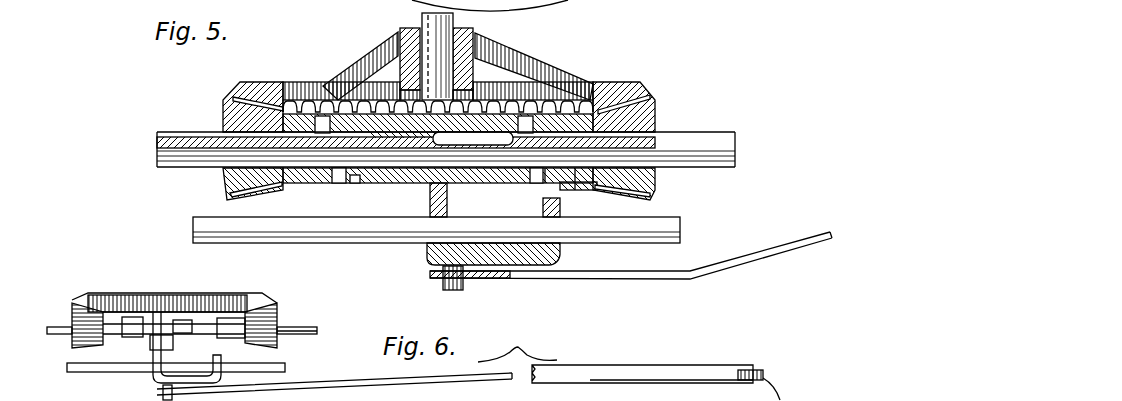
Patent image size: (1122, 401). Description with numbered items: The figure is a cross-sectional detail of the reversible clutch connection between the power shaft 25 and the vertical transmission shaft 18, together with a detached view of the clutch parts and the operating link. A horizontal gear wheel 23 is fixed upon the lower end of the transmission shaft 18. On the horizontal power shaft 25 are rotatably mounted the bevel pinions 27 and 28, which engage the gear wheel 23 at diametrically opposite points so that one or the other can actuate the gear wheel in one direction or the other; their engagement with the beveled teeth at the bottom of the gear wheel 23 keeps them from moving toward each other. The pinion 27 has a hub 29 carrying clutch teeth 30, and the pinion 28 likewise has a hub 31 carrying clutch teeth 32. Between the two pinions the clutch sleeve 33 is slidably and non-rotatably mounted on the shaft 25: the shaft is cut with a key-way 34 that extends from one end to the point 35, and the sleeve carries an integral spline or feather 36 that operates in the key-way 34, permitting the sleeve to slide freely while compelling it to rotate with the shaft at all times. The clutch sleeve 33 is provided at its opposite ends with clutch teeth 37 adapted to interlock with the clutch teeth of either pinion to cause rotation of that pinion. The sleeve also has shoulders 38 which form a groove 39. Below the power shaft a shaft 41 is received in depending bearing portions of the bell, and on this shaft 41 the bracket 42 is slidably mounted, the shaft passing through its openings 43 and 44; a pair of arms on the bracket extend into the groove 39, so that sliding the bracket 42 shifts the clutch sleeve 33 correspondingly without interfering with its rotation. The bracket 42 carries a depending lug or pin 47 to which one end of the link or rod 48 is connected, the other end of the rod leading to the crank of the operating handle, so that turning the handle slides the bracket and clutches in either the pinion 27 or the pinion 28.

In FIG. 5, the transmission shaft 18 is at (440, 40).
In FIG. 5, the gear wheel 23 is at (547, 77).
In FIG. 6, the gear wheel 23 is at (90, 297).
In FIG. 5, the power shaft 25 is at (687, 140).
In FIG. 6, the power shaft 25 is at (293, 327).
In FIG. 5, the pinion 27 is at (233, 182).
In FIG. 6, the pinion 27 is at (72, 348).
In FIG. 5, the pinion 28 is at (650, 186).
In FIG. 6, the pinion 28 is at (275, 345).
In FIG. 5, the hub 29 is at (306, 181).
In FIG. 5, the clutch teeth 30 is at (326, 181).
In FIG. 5, the hub 31 is at (573, 177).
In FIG. 5, the clutch teeth 32 is at (550, 178).
In FIG. 5, the clutch sleeve 33 is at (384, 174).
In FIG. 6, the clutch sleeve 33 is at (137, 322).
In FIG. 5, the key-way 34 is at (172, 137).
In FIG. 5, the point 35 is at (507, 136).
In FIG. 5, the spline or feather 36 is at (377, 128).
In FIG. 5, the clutch teeth 37 is at (523, 183).
In FIG. 5, the shoulders 38 is at (370, 265).
In FIG. 5, the groove 39 is at (485, 92).
In FIG. 5, the shaft 41 is at (657, 232).
In FIG. 6, the shaft 41 is at (176, 367).
In FIG. 5, the bracket 42 is at (520, 250).
In FIG. 6, the bracket 42 is at (188, 382).
In FIG. 5, the opening 43 is at (548, 214).
In FIG. 5, the opening 44 is at (440, 228).
In FIG. 5, the depending lug or pin 47 is at (440, 292).
In FIG. 6, the depending lug or pin 47 is at (167, 392).
In FIG. 5, the link or rod 48 is at (738, 262).
In FIG. 6, the link or rod 48 is at (373, 387).